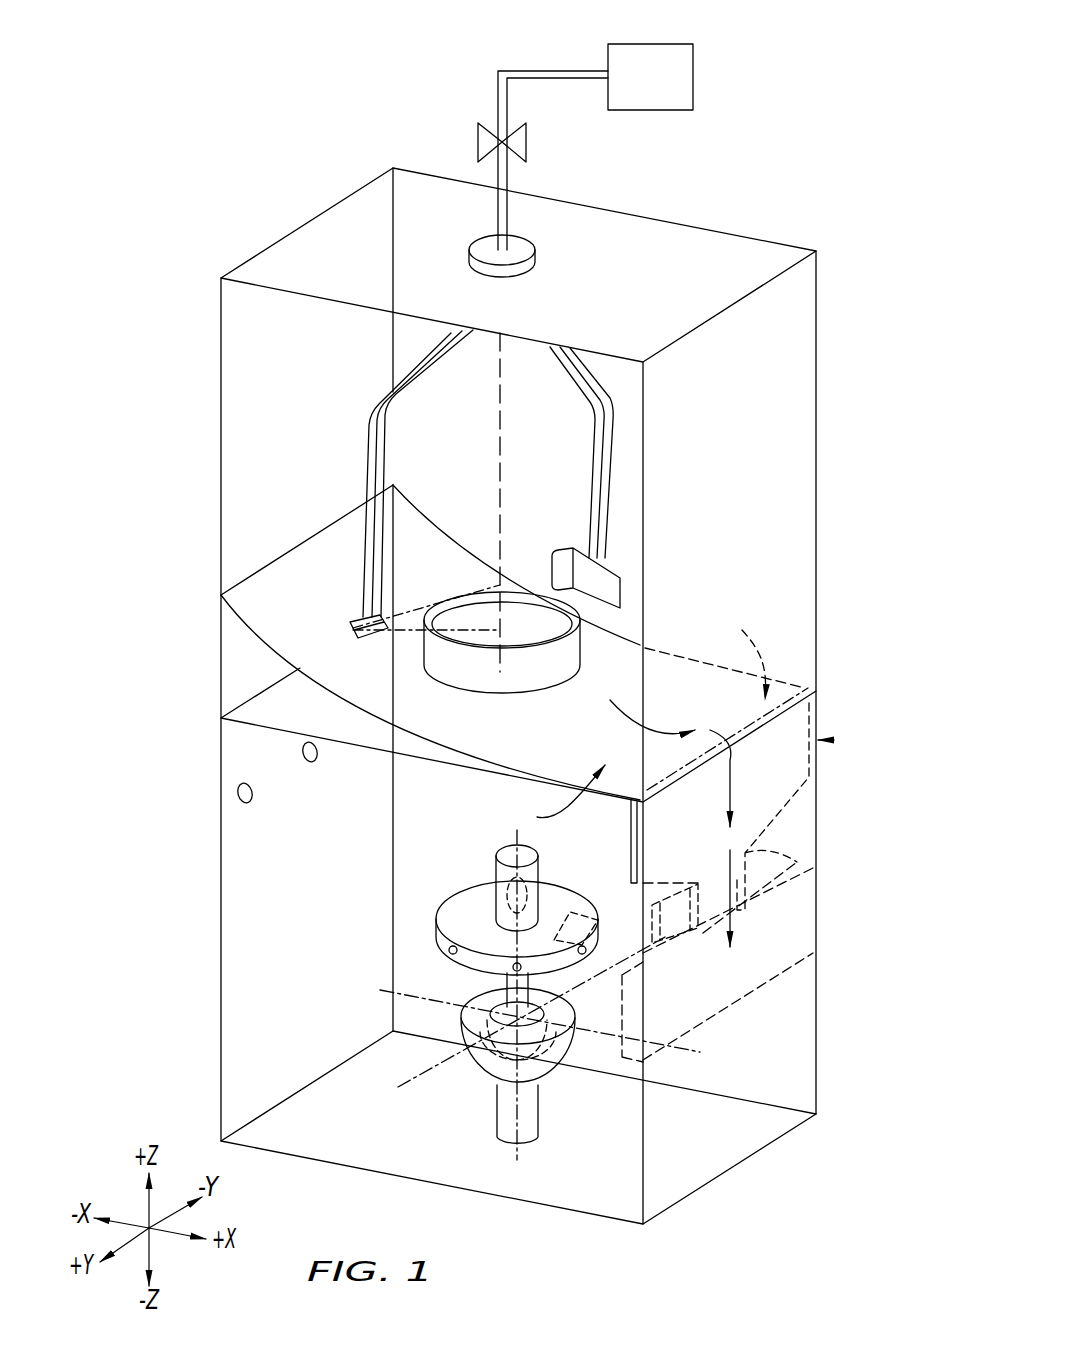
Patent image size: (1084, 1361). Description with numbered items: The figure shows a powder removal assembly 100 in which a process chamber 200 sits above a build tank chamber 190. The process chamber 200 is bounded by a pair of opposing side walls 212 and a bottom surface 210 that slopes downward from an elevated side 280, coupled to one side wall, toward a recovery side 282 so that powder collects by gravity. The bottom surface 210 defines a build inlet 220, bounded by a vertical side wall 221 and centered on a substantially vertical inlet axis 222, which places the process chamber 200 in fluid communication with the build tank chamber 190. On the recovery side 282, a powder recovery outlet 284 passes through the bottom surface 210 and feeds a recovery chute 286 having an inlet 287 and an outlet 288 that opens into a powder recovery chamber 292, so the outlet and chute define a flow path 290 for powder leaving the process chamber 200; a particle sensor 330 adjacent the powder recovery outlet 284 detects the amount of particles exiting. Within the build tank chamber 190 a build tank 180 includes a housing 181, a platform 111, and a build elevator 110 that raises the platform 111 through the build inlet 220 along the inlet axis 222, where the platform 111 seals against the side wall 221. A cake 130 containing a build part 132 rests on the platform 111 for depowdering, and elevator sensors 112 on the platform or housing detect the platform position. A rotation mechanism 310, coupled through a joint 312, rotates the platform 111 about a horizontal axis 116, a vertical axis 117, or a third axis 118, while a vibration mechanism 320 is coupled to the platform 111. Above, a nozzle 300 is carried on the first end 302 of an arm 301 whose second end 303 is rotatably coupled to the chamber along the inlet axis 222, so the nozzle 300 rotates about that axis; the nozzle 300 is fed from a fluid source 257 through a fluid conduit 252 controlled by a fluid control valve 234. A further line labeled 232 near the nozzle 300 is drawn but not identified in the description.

The powder removal assembly 100 is at (196, 190).
The process chamber 200 is at (205, 342).
The opposing side walls 212 is at (265, 448).
The bottom surface 210 is at (309, 553).
The elevated side 280 is at (183, 598).
The build tank chamber 190 is at (160, 803).
The build tank 180 is at (176, 990).
The housing 181 is at (218, 1057).
The elevator sensor 112 is at (252, 797).
The fluid conduit 252 is at (547, 72).
The fluid source 257 is at (695, 70).
The fluid control valve 234 is at (528, 140).
The arm 301 is at (386, 416).
The second end 303 is at (474, 334).
The first end 302 is at (355, 626).
The nozzle 300 is at (370, 642).
The spray axis 232 is at (405, 617).
The inlet axis 222 is at (503, 425).
The side wall 221 is at (576, 657).
The build inlet 220 is at (524, 657).
The flow path 290 is at (670, 813).
The powder recovery outlet 284 is at (747, 650).
The recovery side 282 is at (562, 824).
The inlet 287 is at (800, 697).
The recovery chute 286 is at (836, 740).
The outlet 288 is at (775, 862).
The powder recovery chamber 292 is at (800, 908).
The particle sensor 330 is at (674, 950).
The build elevator 110 is at (495, 1002).
The cake 130 is at (500, 855).
The build part 132 is at (560, 888).
The platform 111 is at (455, 916).
The vibration mechanism 320 is at (584, 908).
The horizontal axis 116 is at (398, 994).
The third axis 118 is at (406, 1089).
The rotation mechanism 310 is at (549, 1092).
The joint 312 is at (553, 1072).
The vertical axis 117 is at (516, 1146).